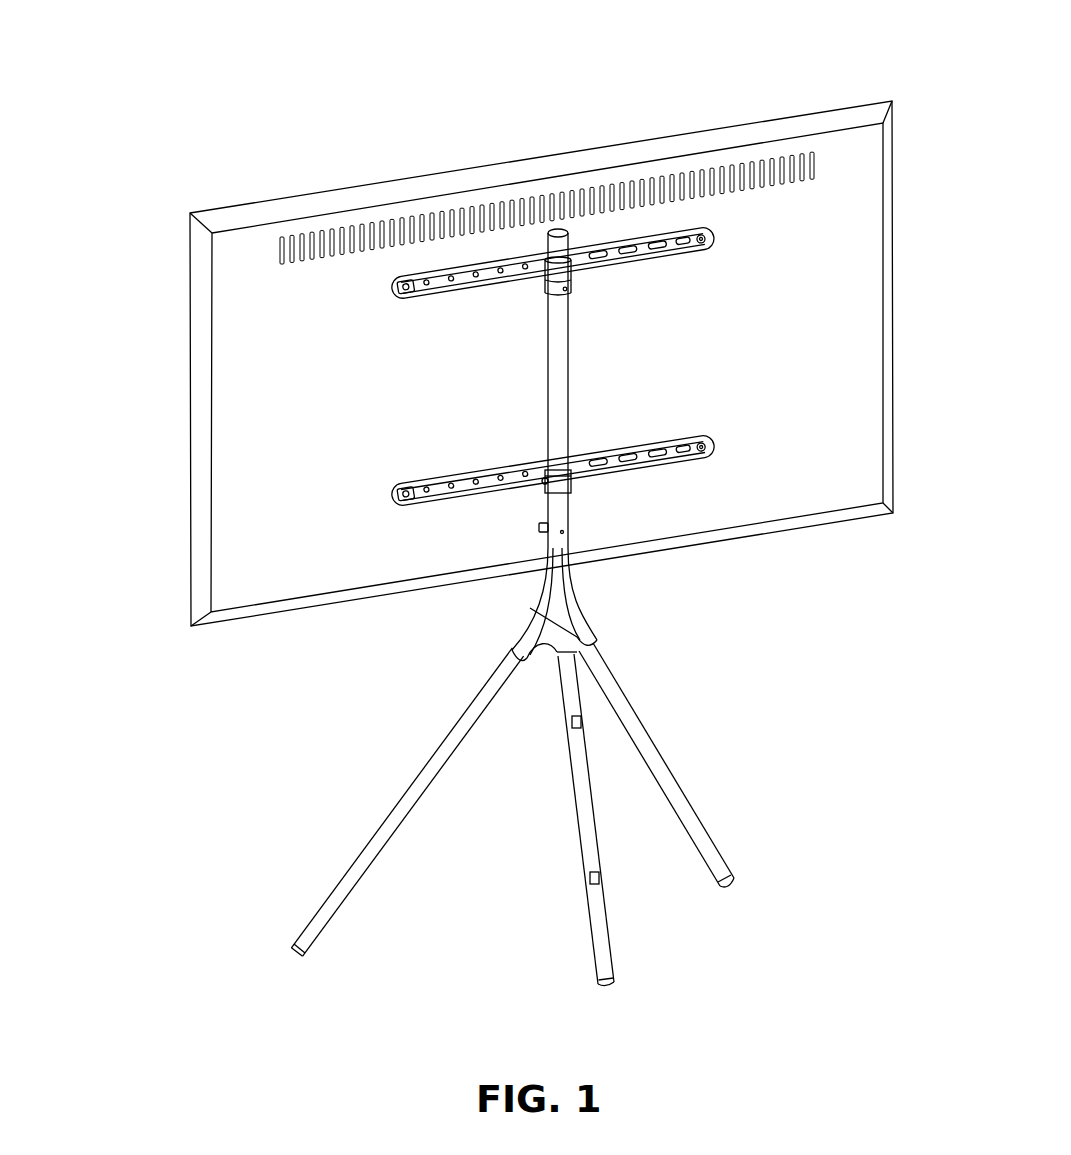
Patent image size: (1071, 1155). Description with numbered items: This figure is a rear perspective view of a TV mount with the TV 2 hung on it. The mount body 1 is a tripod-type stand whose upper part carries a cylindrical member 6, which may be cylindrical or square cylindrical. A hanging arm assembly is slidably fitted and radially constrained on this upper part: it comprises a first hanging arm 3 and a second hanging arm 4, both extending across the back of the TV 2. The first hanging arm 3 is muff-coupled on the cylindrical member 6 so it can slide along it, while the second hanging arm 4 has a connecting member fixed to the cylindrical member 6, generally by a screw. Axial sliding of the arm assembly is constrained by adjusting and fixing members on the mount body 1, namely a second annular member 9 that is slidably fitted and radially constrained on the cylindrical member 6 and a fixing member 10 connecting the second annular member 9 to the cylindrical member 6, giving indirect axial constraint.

The mount body 1 is at (370, 837).
The TV 2 is at (190, 592).
The first hanging arm 3 is at (627, 240).
The second hanging arm 4 is at (652, 473).
The cylindrical member 6 is at (567, 520).
The second annular member 9 is at (570, 292).
The fixing member 10 is at (573, 296).